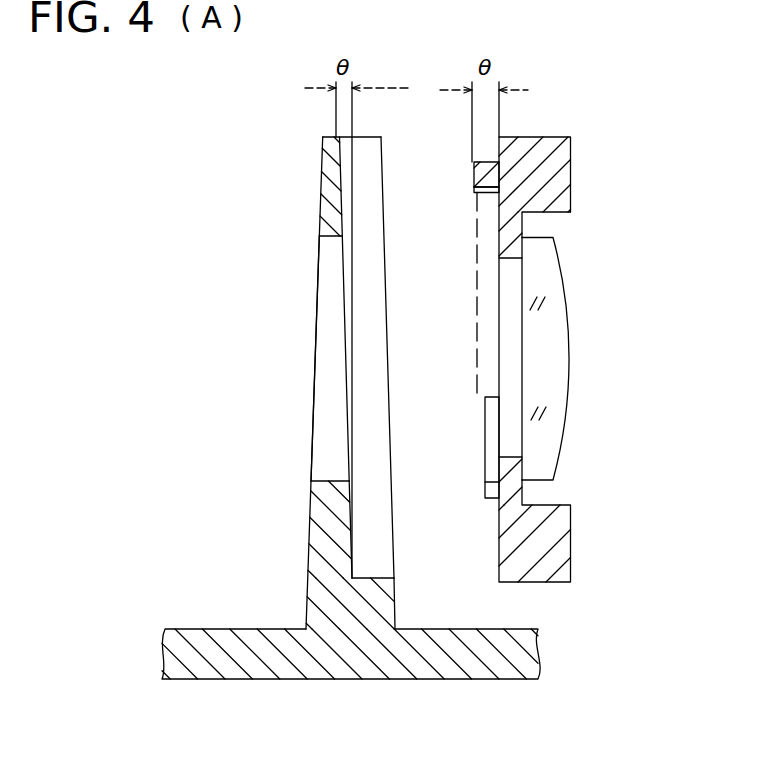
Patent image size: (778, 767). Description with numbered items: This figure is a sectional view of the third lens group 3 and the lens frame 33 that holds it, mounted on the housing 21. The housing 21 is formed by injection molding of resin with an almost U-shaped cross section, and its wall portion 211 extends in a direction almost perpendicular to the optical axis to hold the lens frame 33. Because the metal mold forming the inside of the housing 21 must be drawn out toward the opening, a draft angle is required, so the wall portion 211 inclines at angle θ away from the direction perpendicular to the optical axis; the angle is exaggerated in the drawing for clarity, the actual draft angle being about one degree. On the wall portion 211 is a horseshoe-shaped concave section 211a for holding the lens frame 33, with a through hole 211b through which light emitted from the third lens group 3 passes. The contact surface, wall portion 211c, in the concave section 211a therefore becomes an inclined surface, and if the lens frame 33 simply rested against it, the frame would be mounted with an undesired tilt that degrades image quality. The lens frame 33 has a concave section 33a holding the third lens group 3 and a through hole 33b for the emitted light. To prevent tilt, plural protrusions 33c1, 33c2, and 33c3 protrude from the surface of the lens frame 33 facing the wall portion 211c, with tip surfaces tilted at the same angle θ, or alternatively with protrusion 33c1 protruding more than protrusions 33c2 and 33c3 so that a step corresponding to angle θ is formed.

The third lens group 3 is at (568, 350).
The housing 21 is at (363, 679).
The wall portion 211 is at (321, 188).
The concave section 211a is at (365, 348).
The through hole 211b is at (330, 350).
The wall portion 211c is at (345, 200).
The lens frame 33 is at (537, 137).
The concave section 33a is at (537, 227).
The through hole 33b is at (510, 342).
The protrusion 33c1 is at (473, 162).
The protrusion 33c2 is at (453, 530).
The protrusion 33c3 is at (484, 443).